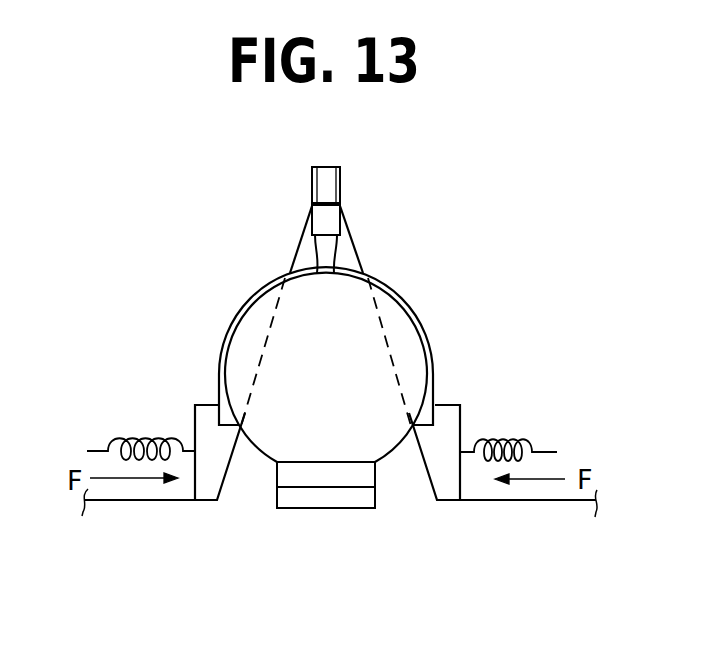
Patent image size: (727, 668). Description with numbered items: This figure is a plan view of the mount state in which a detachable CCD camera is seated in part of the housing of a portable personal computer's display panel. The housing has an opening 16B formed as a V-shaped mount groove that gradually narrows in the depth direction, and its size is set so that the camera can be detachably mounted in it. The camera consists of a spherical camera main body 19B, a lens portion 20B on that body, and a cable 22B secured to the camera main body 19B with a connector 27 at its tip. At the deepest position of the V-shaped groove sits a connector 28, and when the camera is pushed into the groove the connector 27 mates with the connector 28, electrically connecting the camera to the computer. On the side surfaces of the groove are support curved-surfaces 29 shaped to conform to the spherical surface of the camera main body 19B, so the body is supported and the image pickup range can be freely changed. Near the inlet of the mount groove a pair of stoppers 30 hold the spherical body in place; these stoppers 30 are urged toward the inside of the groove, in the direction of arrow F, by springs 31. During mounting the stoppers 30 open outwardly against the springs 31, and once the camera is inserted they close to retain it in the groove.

The opening 16B is at (363, 258).
The camera main body 19B is at (410, 347).
The lens portion 20B is at (317, 475).
The cable 22B is at (316, 261).
The connector 27 is at (330, 218).
The connector 28 is at (327, 189).
The support curved-surfaces 29 is at (222, 358).
The stoppers 30 is at (207, 487).
The springs 31 is at (118, 437).